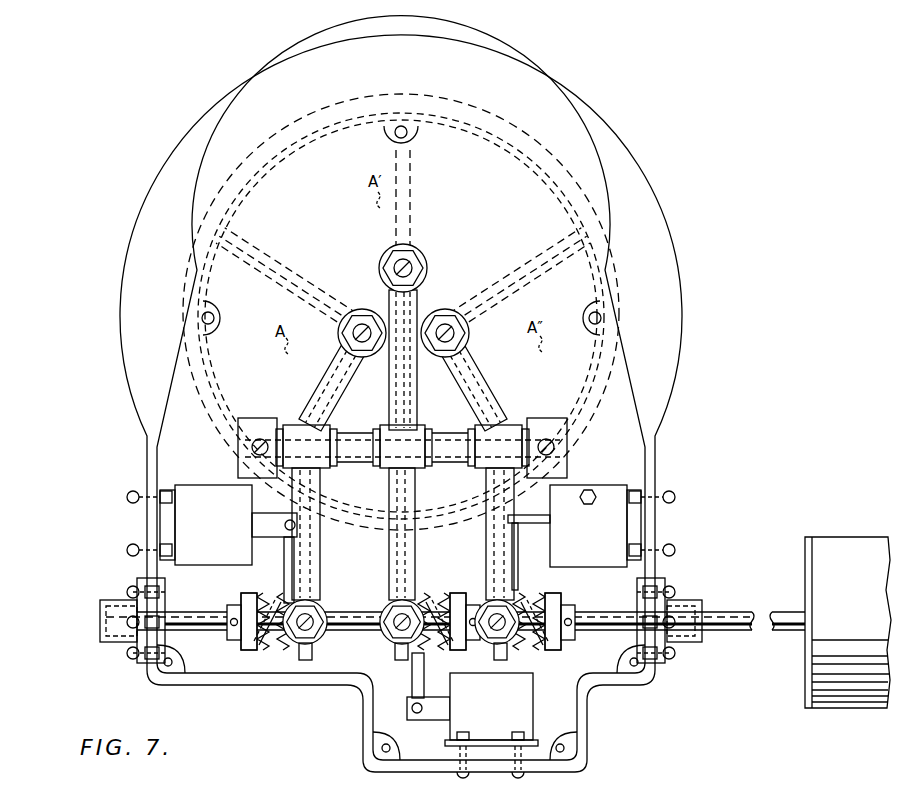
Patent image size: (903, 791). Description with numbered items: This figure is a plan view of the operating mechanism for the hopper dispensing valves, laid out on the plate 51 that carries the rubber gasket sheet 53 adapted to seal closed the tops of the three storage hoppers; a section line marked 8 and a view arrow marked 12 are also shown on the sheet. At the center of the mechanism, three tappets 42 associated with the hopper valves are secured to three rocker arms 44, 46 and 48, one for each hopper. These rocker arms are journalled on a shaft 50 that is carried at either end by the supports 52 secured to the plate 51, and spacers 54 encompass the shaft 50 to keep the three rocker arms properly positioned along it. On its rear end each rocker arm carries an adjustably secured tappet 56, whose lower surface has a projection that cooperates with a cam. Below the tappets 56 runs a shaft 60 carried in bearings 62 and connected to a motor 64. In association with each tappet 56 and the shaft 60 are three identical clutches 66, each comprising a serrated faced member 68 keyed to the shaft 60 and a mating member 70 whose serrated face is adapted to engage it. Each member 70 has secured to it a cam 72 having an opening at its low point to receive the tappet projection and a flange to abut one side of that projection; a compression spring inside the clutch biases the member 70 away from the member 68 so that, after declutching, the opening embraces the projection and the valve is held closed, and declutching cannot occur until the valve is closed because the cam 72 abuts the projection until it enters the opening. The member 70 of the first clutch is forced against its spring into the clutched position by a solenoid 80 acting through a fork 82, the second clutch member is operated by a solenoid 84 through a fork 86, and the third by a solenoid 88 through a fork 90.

The section line 8- 8 is at (100, 620).
The view direction indicator 12 is at (205, 580).
The tappet 42 is at (410, 240).
The rocker arm 44 is at (330, 384).
The rocker arm 46 is at (417, 385).
The rocker arm 48 is at (485, 365).
The shaft 50 is at (362, 432).
The plate 51 is at (120, 338).
The support 52 is at (240, 464).
The rubber gasket sheet 53 is at (194, 237).
The spacer 54 is at (348, 432).
The tappet 56 is at (320, 640).
The shaft 60 is at (355, 612).
The bearing 62 is at (165, 635).
The motor 64 is at (810, 583).
The clutch 66 is at (242, 654).
The serrated faced member 68 is at (247, 600).
The member 70 is at (280, 600).
The cam 72 is at (299, 660).
The solenoid 80 is at (215, 544).
The fork 82 is at (286, 570).
The solenoid 84 is at (493, 722).
The fork 86 is at (424, 685).
The solenoid 88 is at (591, 544).
The fork 90 is at (518, 545).